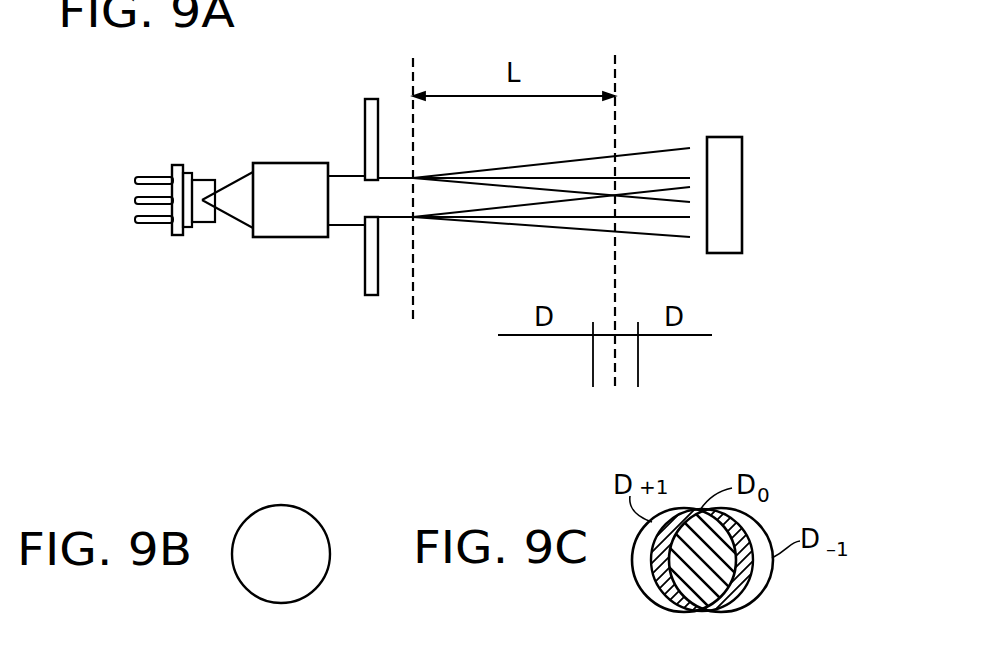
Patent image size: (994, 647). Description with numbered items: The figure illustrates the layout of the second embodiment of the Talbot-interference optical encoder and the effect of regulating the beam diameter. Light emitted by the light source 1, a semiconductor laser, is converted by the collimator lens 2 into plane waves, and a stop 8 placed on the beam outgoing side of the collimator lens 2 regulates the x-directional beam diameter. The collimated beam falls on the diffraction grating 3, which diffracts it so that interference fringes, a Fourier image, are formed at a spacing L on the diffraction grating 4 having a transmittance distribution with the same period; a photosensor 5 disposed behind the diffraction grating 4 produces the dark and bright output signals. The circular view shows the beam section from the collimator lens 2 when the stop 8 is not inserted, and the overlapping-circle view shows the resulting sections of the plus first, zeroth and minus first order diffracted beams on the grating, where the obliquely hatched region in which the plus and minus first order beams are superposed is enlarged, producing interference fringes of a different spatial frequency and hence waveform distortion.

The light source 1 is at (184, 165).
The collimator lens 2 is at (283, 172).
The diffraction grating 3 is at (410, 320).
The diffraction grating 4 is at (616, 72).
The photosensor 5 is at (742, 162).
The stop 8 is at (370, 99).